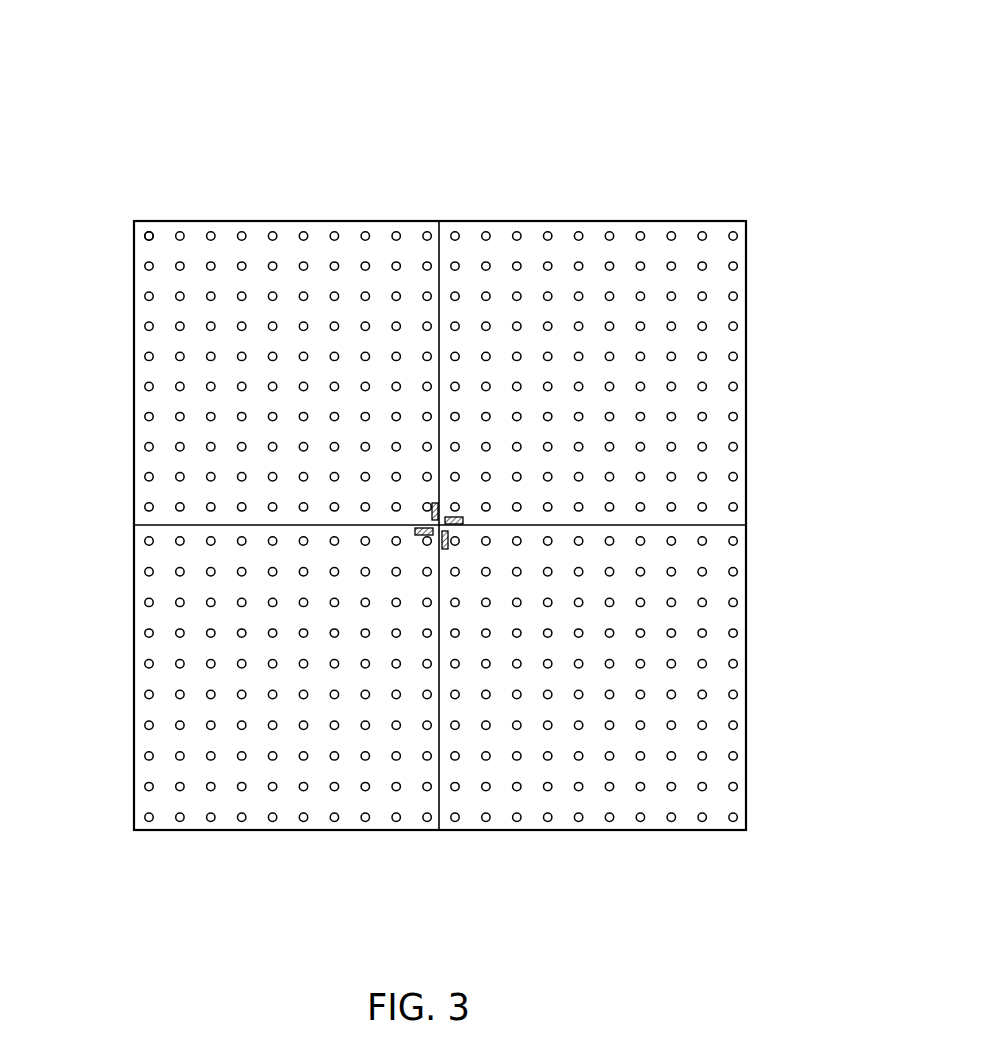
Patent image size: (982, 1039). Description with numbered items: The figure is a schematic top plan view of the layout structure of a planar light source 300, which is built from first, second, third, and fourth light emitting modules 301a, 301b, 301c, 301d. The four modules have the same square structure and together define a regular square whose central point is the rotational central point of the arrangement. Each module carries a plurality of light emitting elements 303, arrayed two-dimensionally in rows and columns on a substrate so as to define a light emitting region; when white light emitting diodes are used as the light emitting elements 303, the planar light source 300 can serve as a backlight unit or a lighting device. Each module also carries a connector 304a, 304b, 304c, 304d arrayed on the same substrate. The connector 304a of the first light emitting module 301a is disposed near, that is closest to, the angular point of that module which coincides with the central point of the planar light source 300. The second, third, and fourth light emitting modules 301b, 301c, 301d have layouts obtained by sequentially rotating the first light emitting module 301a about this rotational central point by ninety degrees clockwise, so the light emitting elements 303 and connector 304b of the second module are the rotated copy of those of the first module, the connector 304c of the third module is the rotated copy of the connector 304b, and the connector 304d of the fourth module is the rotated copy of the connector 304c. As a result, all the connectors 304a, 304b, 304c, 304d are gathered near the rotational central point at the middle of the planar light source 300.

The planar light source 300 is at (478, 85).
The first light emitting module 301a is at (143, 250).
The second light emitting module 301b is at (735, 252).
The third light emitting module 301c is at (732, 738).
The fourth light emitting module 301d is at (197, 822).
The light emitting elements 303 is at (149, 236).
The connector 304a is at (432, 503).
The connector 304b is at (463, 518).
The connector 304c is at (446, 549).
The connector 304d is at (416, 535).